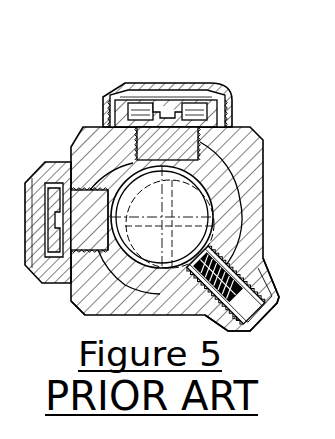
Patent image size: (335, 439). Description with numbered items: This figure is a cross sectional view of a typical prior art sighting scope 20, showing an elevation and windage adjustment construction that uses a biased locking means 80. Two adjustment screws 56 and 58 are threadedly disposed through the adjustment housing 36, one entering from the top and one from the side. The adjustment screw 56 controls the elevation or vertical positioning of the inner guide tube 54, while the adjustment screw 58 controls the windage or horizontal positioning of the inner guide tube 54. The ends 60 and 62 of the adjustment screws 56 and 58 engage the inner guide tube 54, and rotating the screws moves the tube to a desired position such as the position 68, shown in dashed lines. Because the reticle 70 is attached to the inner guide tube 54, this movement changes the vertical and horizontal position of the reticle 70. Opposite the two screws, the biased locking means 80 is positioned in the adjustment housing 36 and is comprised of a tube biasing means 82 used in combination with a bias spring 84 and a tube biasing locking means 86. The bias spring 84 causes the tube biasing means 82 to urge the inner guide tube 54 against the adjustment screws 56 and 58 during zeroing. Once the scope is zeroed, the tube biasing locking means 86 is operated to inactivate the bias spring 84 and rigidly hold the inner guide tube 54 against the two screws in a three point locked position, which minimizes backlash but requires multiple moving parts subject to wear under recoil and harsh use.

The sighting scope 20 is at (58, 62).
The adjustment housing 36 is at (233, 140).
The inner guide tube 54 is at (243, 173).
The adjustment screw 56 is at (172, 120).
The adjustment screw 58 is at (83, 212).
The end of adjustment screw 60 is at (206, 116).
The end of adjustment screw 62 is at (92, 272).
The adjusted position 68 is at (243, 171).
The reticle 70 is at (247, 200).
The tube biasing means 82 is at (253, 224).
The bias spring 84 is at (243, 245).
The tube biasing locking means 86 is at (250, 287).
The biased locking means 80 is at (262, 321).